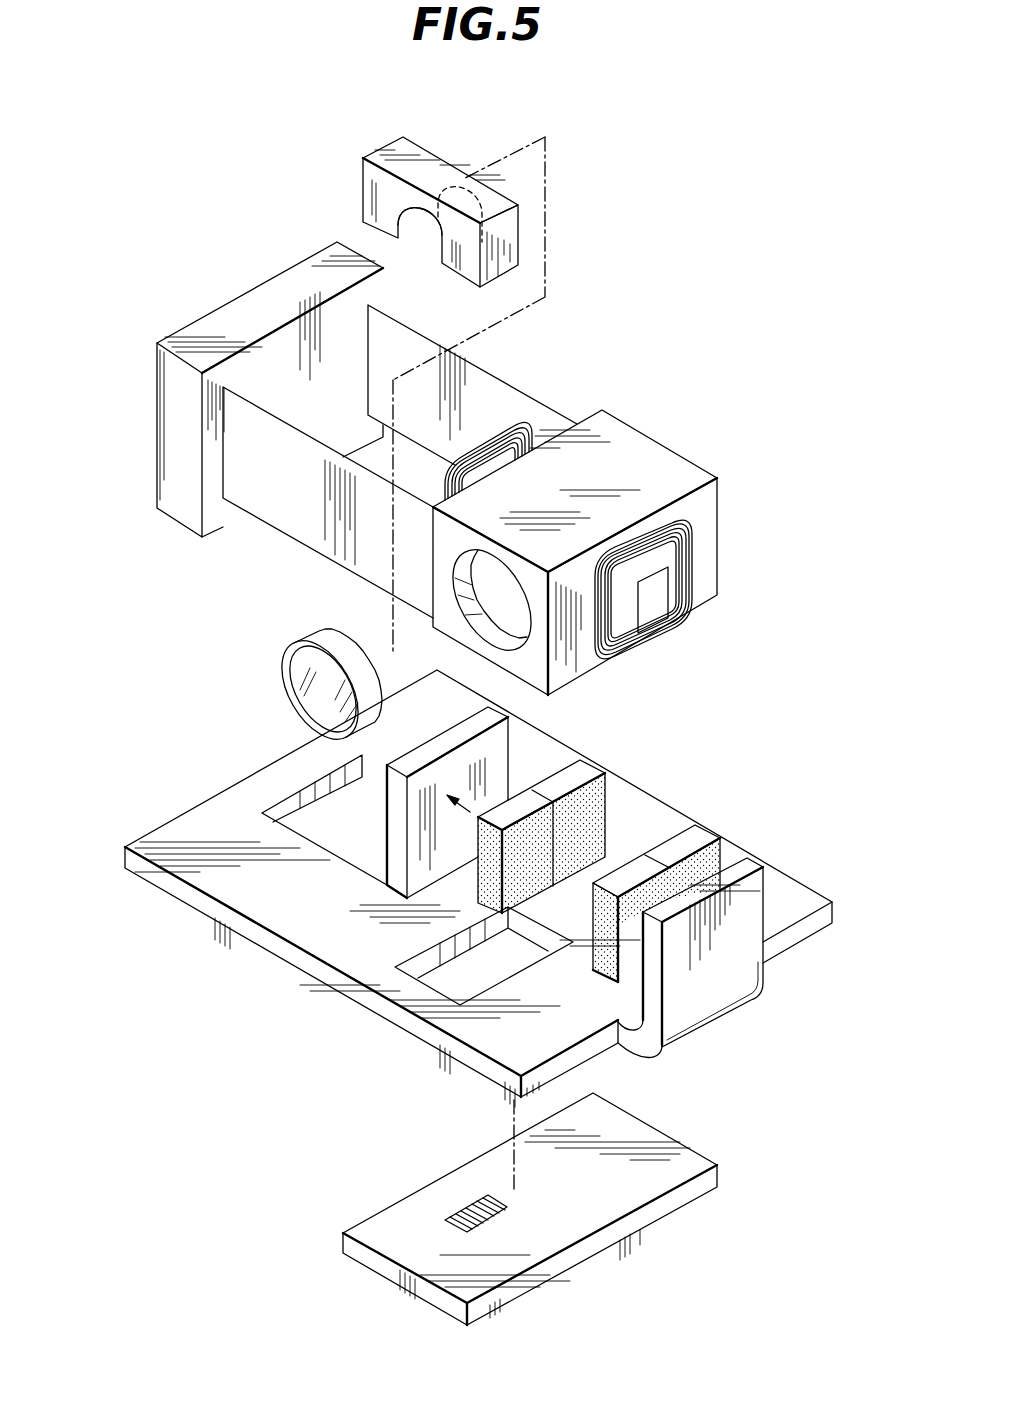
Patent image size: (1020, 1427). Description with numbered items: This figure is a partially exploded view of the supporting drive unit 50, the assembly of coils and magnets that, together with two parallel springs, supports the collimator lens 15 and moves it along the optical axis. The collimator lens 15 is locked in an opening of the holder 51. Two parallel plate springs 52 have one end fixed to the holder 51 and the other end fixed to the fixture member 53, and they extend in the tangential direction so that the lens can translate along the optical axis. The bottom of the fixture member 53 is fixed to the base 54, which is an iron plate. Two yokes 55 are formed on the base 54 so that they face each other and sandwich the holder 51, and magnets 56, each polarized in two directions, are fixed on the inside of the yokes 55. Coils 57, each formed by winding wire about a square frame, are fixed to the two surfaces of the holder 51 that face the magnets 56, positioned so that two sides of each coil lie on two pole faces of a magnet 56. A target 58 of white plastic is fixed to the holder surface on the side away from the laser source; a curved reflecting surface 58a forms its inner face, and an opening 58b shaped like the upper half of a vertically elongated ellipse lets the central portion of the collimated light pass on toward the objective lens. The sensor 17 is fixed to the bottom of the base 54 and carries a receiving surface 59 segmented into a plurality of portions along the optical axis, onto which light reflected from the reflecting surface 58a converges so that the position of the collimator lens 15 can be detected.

The supporting drive unit 50 is at (712, 222).
The holder 51 is at (650, 455).
The plate springs 52 is at (505, 385).
The fixture member 53 is at (180, 512).
The base 54 is at (170, 883).
The yokes 55 is at (740, 868).
The magnets 56 is at (692, 838).
The coils 57 is at (525, 445).
The target 58 is at (370, 185).
The reflecting surface 58a is at (455, 192).
The opening 58b is at (412, 223).
The collimator lens 15 is at (283, 697).
The sensor 17 is at (678, 1160).
The receiving surface 59 is at (445, 1222).